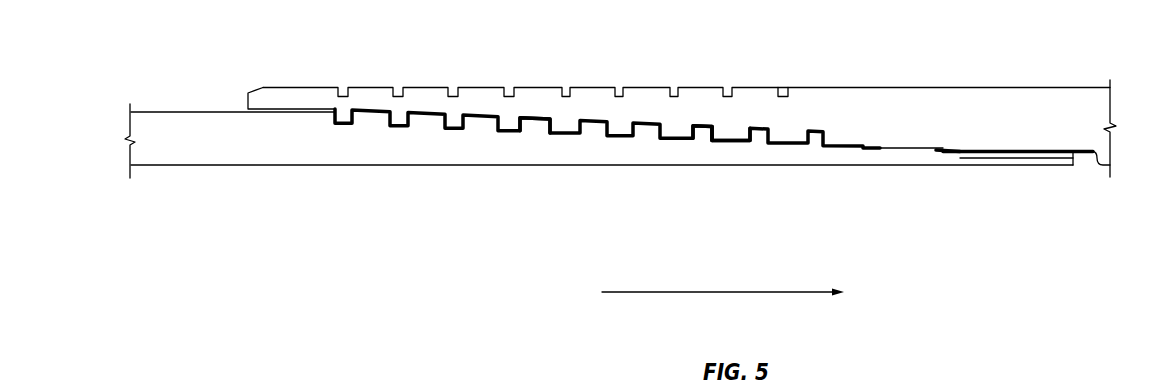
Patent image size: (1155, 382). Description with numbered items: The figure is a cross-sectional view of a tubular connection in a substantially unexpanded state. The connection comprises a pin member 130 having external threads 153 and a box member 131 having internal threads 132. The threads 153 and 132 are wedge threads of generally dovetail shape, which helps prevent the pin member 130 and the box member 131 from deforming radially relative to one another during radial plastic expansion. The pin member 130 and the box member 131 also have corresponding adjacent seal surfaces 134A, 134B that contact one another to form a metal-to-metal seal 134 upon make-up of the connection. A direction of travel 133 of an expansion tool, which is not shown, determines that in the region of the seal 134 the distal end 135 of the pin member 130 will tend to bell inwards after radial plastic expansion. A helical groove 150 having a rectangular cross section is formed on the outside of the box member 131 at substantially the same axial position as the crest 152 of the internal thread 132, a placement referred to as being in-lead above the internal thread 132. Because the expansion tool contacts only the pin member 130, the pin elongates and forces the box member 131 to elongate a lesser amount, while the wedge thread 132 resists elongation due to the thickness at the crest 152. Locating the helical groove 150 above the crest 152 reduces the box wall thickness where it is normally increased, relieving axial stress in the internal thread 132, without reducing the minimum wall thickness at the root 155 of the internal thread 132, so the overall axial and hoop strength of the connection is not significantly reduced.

The pin member 130 is at (185, 152).
The box member 131 is at (972, 120).
The internal threads 132 is at (563, 118).
The direction of travel 133 is at (703, 292).
The metal-to-metal seal 134 is at (947, 152).
The seal surface 134A is at (922, 150).
The seal surface 134B is at (941, 148).
The distal end 135 is at (1058, 160).
The helical groove 150 is at (789, 87).
The crest 152 is at (724, 138).
The external threads 153 is at (532, 132).
The root 155 is at (705, 127).